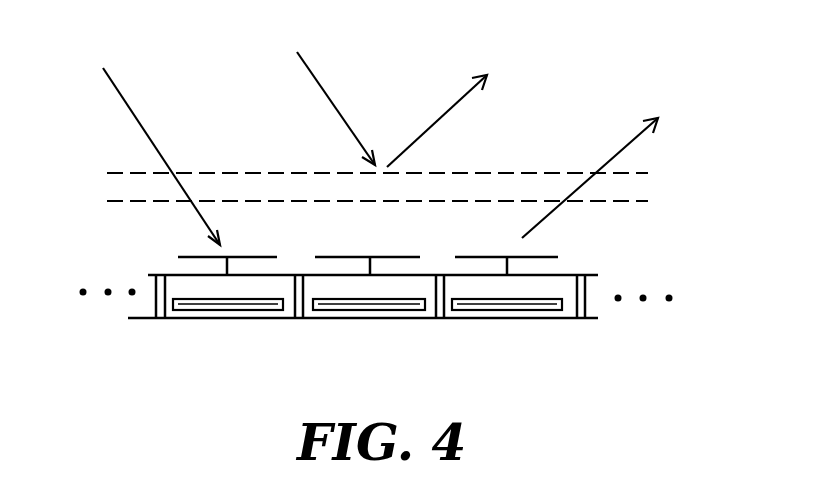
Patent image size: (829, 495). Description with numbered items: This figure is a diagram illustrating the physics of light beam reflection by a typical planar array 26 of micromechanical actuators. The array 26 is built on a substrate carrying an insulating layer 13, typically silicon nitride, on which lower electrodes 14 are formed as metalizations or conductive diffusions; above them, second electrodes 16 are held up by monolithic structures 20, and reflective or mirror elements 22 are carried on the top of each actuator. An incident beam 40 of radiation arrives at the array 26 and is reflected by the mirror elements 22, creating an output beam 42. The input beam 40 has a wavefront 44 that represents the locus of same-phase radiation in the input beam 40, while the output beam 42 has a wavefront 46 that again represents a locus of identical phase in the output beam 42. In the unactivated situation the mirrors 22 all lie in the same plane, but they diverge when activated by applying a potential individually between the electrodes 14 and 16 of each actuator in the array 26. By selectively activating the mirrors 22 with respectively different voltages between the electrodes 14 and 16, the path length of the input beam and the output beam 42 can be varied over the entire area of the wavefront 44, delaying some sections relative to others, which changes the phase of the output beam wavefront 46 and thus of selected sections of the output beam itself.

The insulating layer 13 is at (202, 312).
The electrodes 14 is at (223, 305).
The second electrodes 16 is at (178, 274).
The monolithic structures 20 is at (587, 303).
The mirror elements 22 is at (342, 257).
The array 26 is at (115, 308).
The incident beam 40 is at (161, 153).
The output beam 42 is at (477, 145).
The wavefront 44 is at (132, 172).
The wavefront 46 is at (618, 204).